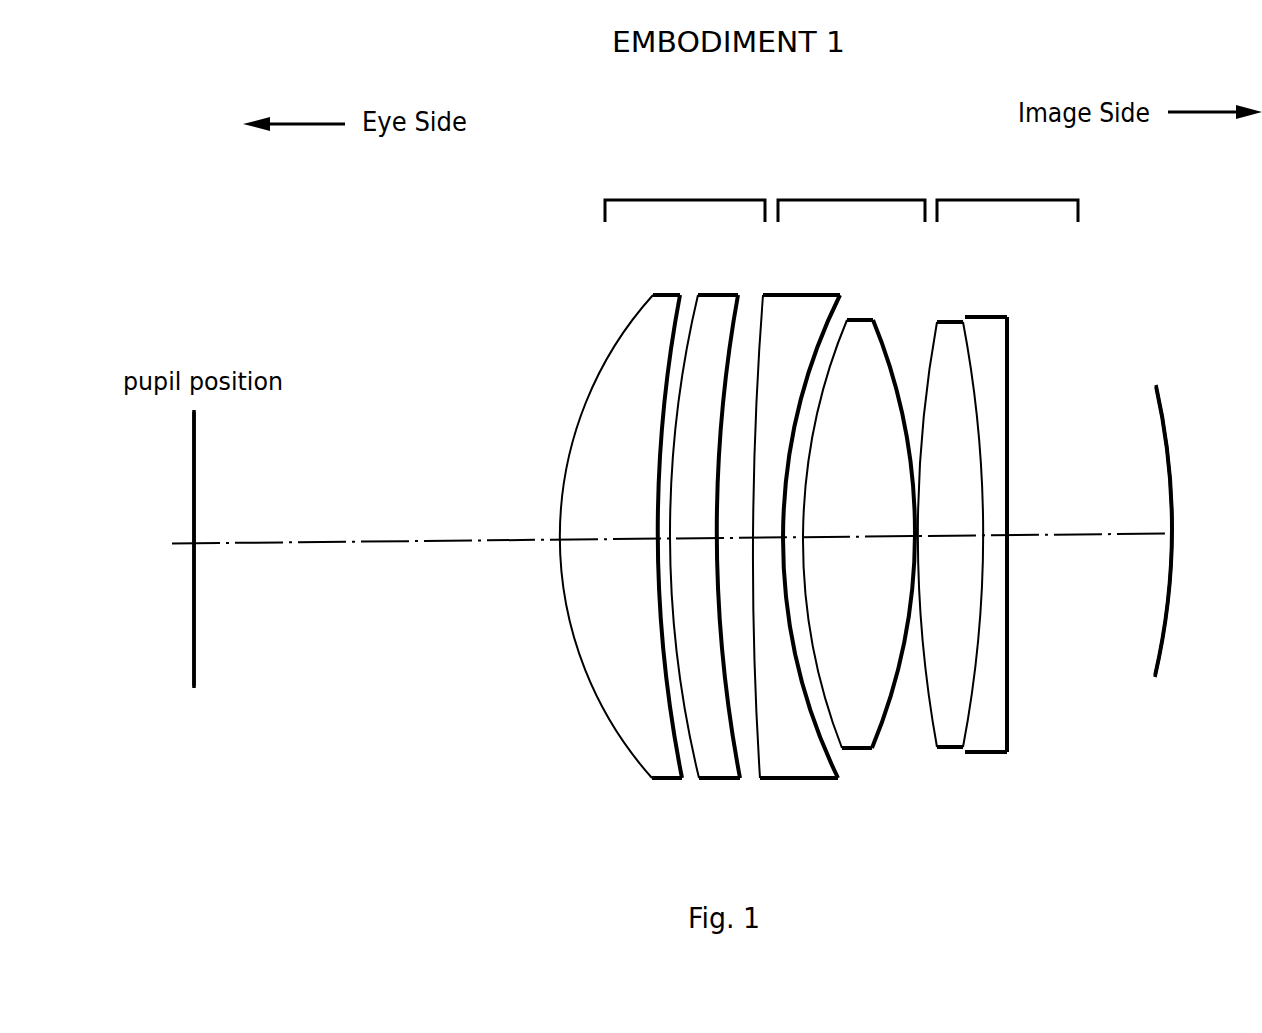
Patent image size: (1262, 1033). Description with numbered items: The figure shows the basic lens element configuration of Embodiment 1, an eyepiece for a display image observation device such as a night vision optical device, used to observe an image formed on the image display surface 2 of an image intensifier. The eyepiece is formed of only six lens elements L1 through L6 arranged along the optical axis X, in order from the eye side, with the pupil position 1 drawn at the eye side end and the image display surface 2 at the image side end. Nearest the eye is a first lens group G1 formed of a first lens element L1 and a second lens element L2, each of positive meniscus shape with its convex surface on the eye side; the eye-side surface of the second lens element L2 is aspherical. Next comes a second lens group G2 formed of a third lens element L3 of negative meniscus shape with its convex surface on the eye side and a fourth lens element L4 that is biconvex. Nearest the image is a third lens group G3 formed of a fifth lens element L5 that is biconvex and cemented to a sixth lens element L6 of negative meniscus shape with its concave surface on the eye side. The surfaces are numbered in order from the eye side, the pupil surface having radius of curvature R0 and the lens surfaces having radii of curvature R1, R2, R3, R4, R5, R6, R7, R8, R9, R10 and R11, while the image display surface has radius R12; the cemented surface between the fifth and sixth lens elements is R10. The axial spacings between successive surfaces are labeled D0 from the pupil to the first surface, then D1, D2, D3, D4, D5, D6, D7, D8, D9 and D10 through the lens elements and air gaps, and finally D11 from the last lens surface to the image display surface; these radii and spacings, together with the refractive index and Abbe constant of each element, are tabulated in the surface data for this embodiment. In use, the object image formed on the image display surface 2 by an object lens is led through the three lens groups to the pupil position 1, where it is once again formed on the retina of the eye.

The pupil position 1 is at (197, 650).
The image display surface 2 is at (1158, 637).
The radius of curvature of pupil surface R0 is at (197, 443).
The radius of curvature of first surface R1 is at (602, 381).
The radius of curvature of second surface R2 is at (677, 378).
The radius of curvature of third surface R3 is at (695, 345).
The radius of curvature of fourth surface R4 is at (735, 347).
The radius of curvature of fifth surface R5 is at (750, 405).
The radius of curvature of sixth surface R6 is at (808, 405).
The radius of curvature of seventh surface R7 is at (808, 432).
The radius of curvature of eighth surface R8 is at (883, 330).
The radius of curvature of ninth surface R9 is at (927, 367).
The radius of curvature of tenth surface R10 is at (972, 352).
The radius of curvature of eleventh surface R11 is at (1007, 418).
The radius of curvature of image display surface R12 is at (1157, 405).
The spacing from pupil to first surface D0 is at (377, 521).
The thickness of first lens element D1 is at (606, 540).
The spacing between first and second lens elements D2 is at (657, 548).
The thickness of second lens element D3 is at (692, 540).
The spacing between second and third lens elements D4 is at (733, 550).
The thickness of third lens element D5 is at (766, 540).
The spacing between third and fourth lens elements D6 is at (793, 548).
The thickness of fourth lens element D7 is at (853, 540).
The spacing between fourth and fifth lens elements D8 is at (915, 547).
The thickness of fifth lens element D9 is at (963, 540).
The thickness of sixth lens element D10 is at (997, 535).
The spacing from sixth lens element to image display surface D11 is at (1108, 533).
The first lens element L1 is at (617, 506).
The second lens element L2 is at (718, 508).
The third lens element L3 is at (808, 506).
The fourth lens element L4 is at (859, 494).
The fifth lens element L5 is at (991, 497).
The sixth lens element L6 is at (1014, 501).
The first lens group G1 is at (685, 192).
The second lens group G2 is at (851, 192).
The third lens group G3 is at (1007, 192).
The optical axis X is at (457, 545).